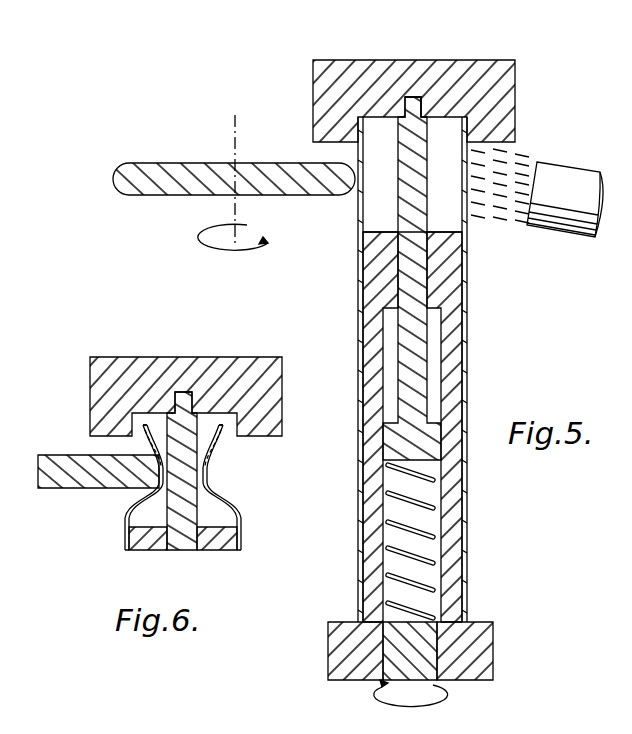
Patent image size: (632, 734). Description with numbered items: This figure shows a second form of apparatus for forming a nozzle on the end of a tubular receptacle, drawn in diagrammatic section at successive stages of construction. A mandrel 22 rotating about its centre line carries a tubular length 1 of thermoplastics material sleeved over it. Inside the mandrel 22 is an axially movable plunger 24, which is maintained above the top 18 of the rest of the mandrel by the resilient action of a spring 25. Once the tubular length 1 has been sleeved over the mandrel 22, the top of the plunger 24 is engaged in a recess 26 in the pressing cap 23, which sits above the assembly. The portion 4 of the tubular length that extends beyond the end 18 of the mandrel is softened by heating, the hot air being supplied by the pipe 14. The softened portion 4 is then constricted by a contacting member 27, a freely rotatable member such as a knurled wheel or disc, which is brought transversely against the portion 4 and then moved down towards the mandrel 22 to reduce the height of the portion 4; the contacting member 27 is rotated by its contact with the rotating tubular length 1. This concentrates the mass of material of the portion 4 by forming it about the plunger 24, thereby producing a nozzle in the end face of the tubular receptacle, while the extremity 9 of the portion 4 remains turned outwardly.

In FIG. 5, the tubular length 1 is at (468, 495).
In FIG. 5, the portion 4 is at (363, 179).
In FIG. 6, the portion 4 is at (235, 497).
In FIG. 6, the extremity 9 is at (224, 430).
In FIG. 5, the pipe 14 is at (551, 229).
In FIG. 5, the top of the mandrel 18 is at (376, 232).
In FIG. 5, the mandrel 22 is at (453, 376).
In FIG. 6, the mandrel 22 is at (140, 546).
In FIG. 5, the pressing cap 23 is at (503, 83).
In FIG. 6, the pressing cap 23 is at (128, 370).
In FIG. 5, the plunger 24 is at (418, 286).
In FIG. 6, the plunger 24 is at (184, 530).
In FIG. 5, the spring 25 is at (420, 533).
In FIG. 5, the recess 26 is at (418, 104).
In FIG. 5, the contacting member 27 is at (196, 178).
In FIG. 6, the contacting member 27 is at (89, 478).